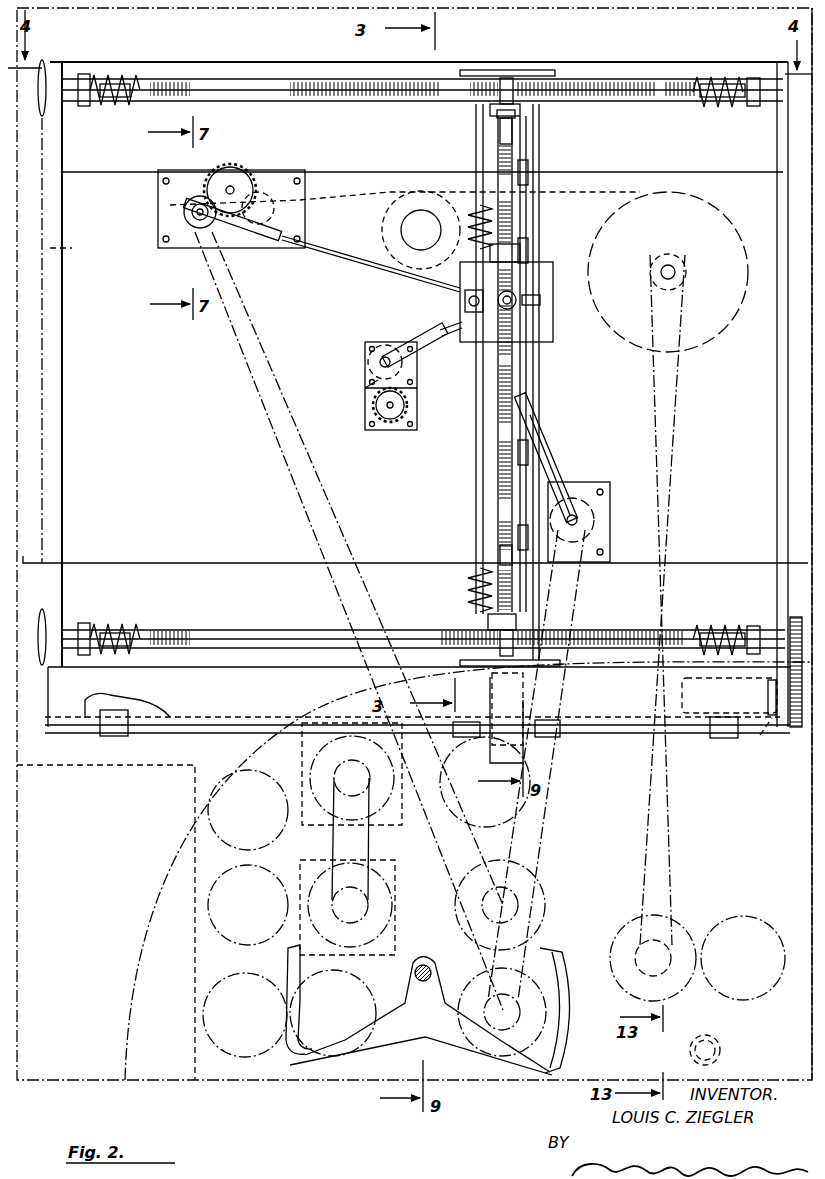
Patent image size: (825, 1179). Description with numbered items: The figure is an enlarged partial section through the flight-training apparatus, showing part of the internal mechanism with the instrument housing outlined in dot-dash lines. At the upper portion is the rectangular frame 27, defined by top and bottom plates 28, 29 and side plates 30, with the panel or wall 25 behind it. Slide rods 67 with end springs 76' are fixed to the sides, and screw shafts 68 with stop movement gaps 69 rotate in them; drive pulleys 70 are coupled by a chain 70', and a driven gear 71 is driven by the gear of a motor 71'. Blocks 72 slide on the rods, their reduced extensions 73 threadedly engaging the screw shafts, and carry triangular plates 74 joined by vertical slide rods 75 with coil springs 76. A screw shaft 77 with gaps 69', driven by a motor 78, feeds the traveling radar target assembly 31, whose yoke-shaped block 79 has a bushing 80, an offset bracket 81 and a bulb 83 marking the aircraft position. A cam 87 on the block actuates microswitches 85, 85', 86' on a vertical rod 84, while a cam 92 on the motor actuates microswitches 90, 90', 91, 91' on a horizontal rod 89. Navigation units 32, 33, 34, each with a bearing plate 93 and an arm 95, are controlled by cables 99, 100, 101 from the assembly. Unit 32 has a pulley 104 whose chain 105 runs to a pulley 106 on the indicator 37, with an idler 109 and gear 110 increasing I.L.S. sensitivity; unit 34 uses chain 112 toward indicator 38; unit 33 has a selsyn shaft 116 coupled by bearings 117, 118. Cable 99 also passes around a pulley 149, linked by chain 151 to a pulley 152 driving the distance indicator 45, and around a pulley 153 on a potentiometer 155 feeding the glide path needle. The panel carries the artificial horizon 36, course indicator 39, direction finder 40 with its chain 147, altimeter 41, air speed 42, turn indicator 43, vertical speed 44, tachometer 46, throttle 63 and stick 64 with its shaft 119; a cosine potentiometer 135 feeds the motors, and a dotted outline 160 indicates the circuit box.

The panel or wall 25 is at (270, 565).
The rectangular frame 27 is at (66, 366).
The top plate 28 is at (335, 70).
The bottom plate 29 is at (192, 668).
The side plates 30 is at (62, 420).
The traveling radar target assembly 31 is at (558, 338).
The navigation unit 32 is at (154, 212).
The navigation unit 33 is at (372, 340).
The navigation unit 34 is at (595, 481).
The artificial horizon 36 is at (528, 790).
The visual omni bearing and glide path indicator 37 is at (530, 880).
The indicator (OBI) 38 is at (525, 985).
The course indicator 39 is at (392, 800).
The automatic direction finder (ADF) 40 is at (382, 885).
The altimeter 41 is at (210, 826).
The air speed indicator 42 is at (210, 893).
The turn indicator 43 is at (210, 978).
The instantaneous vertical speed indicator 44 is at (370, 1000).
The distance measuring indicator (DME) 45 is at (680, 925).
The tachometer 46 is at (762, 920).
The throttle 63 is at (718, 1050).
The dual handgrip stick 64 is at (408, 1040).
The slide rods 67 is at (283, 79).
The screw shafts 68 is at (560, 98).
The stop movement gaps 69 is at (419, 348).
The stop movement gaps 69' is at (479, 337).
The drive pulleys 70 is at (55, 378).
The chain 70' is at (75, 246).
The driven gear 71 is at (775, 651).
The motor 71' is at (775, 718).
The blocks 72 is at (512, 78).
The reduced extensions 73 is at (500, 82).
The triangular plates 74 is at (528, 70).
The vertical slide rods 75 is at (498, 380).
The coil springs 76 is at (467, 359).
The end springs 76' is at (417, 365).
The screw shaft 77 is at (533, 400).
The motor 78 is at (600, 697).
The yoke-shaped block 79 is at (553, 318).
The bushing 80 is at (518, 250).
The offset bracket 81 is at (465, 300).
The bulb 83 is at (515, 292).
The vertical rod 84 is at (527, 385).
The microswitch 85 is at (542, 428).
The microswitch 85' is at (507, 372).
The microswitch 86' is at (544, 156).
The cam 87 is at (540, 298).
The horizontal rod 89 is at (685, 735).
The microswitch 90 is at (466, 743).
The microswitch 90' is at (567, 736).
The microswitch 91 is at (120, 723).
The microswitch 91' is at (729, 743).
The cam 92 is at (505, 720).
The bearing plate 93 is at (160, 222).
The arm 95 is at (282, 224).
The cable 99 is at (352, 258).
The cable 100 is at (448, 336).
The cable 101 is at (555, 440).
The pulley 104 is at (190, 228).
The chain 105 is at (270, 410).
The pulley 106 is at (480, 905).
The idler 109 is at (235, 164).
The gear 110 is at (262, 192).
The chain 112 is at (590, 590).
The shaft 116 is at (386, 406).
The bearing 117 is at (366, 392).
The bearing 118 is at (370, 358).
The shaft 119 is at (423, 965).
The cosine potentiometer 135 is at (262, 765).
The chain 147 is at (330, 825).
The pulley 149 is at (728, 325).
The chain 151 is at (672, 492).
The pulley 152 is at (643, 938).
The pulley 153 is at (385, 200).
The potentiometer 155 is at (405, 232).
The circuit box 160 is at (130, 760).